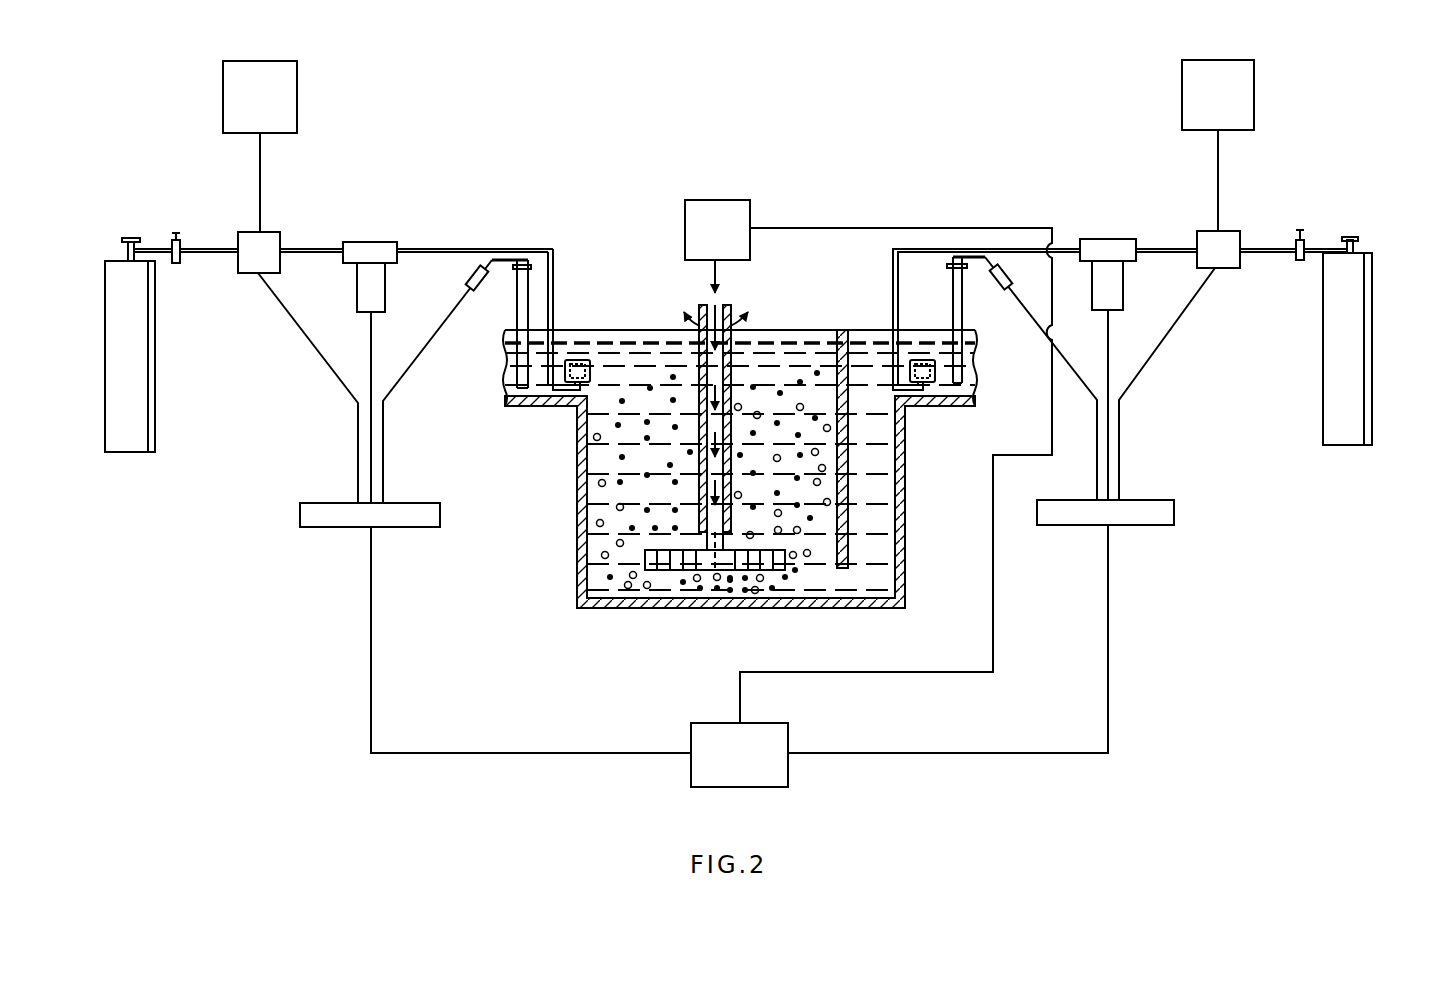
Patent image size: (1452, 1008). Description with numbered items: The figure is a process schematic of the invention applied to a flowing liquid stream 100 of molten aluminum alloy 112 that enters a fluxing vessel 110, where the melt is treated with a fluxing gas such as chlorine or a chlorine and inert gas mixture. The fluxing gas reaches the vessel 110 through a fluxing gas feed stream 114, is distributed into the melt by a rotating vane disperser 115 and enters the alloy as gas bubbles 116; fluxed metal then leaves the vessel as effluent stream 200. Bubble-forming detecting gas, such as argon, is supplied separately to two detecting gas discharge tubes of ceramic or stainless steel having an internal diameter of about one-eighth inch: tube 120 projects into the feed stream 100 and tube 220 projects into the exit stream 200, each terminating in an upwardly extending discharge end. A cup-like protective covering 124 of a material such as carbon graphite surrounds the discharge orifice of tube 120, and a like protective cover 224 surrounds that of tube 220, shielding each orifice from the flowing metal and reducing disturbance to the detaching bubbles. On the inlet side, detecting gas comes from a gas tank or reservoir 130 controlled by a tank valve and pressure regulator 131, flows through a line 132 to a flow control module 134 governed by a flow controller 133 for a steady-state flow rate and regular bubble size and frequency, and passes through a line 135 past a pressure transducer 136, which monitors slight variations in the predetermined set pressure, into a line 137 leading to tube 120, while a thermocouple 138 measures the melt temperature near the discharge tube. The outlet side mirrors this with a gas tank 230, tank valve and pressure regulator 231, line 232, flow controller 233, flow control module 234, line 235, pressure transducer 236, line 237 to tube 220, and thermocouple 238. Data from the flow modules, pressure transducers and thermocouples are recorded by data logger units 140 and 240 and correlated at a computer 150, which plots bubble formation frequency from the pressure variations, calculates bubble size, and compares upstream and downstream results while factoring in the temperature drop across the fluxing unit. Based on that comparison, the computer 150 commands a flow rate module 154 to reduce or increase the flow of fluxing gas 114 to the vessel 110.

The flowing liquid stream 100 is at (503, 385).
The fluxing vessel 110 is at (577, 555).
The molten aluminum alloy 112 is at (595, 476).
The fluxing gas feed stream 114 is at (718, 272).
The rotating vane disperser 115 is at (665, 572).
The gas bubbles 116 is at (616, 508).
The detecting gas discharge tube 120 is at (553, 314).
The protective covering 124 is at (583, 404).
The gas cylinder 130 is at (105, 316).
The valve 131 is at (174, 236).
The gas line 132 is at (226, 256).
The controller 133 is at (297, 82).
The flow controller 134 is at (252, 232).
The gas line 135 is at (333, 248).
The T-fitting 136 is at (375, 242).
The conduit 137 is at (510, 248).
The probe tube 138 is at (528, 280).
The data logger unit 140 is at (336, 503).
The computer 150 is at (788, 736).
The flow rate module 154 is at (722, 200).
The effluent stream 200 is at (975, 373).
The detecting gas discharge tube 220 is at (893, 312).
The protective cover 224 is at (926, 384).
The gas cylinder 230 is at (1372, 304).
The valve 231 is at (1306, 238).
The gas line 232 is at (1250, 256).
The controller 233 is at (1254, 84).
The flow controller 234 is at (1228, 231).
The gas line 235 is at (1148, 247).
The T-fitting 236 is at (1110, 239).
The conduit 237 is at (943, 248).
The probe tube 238 is at (950, 285).
The data logger unit 240 is at (1157, 500).